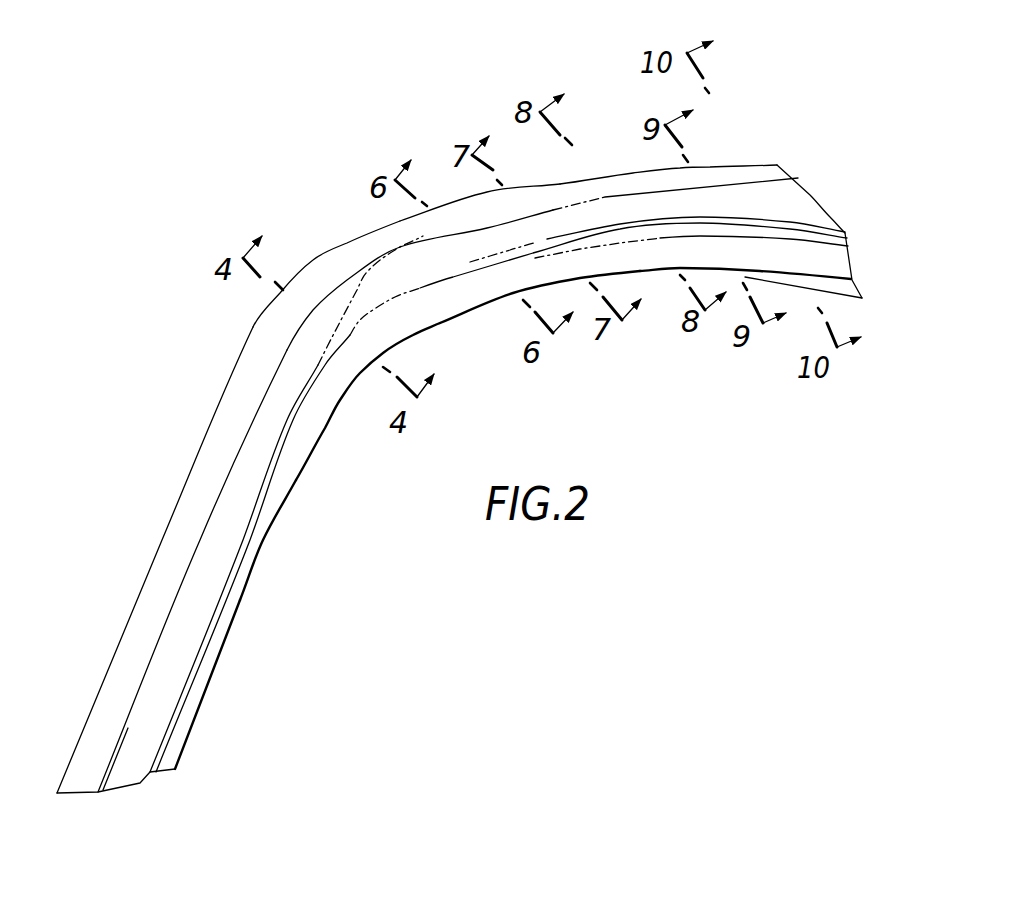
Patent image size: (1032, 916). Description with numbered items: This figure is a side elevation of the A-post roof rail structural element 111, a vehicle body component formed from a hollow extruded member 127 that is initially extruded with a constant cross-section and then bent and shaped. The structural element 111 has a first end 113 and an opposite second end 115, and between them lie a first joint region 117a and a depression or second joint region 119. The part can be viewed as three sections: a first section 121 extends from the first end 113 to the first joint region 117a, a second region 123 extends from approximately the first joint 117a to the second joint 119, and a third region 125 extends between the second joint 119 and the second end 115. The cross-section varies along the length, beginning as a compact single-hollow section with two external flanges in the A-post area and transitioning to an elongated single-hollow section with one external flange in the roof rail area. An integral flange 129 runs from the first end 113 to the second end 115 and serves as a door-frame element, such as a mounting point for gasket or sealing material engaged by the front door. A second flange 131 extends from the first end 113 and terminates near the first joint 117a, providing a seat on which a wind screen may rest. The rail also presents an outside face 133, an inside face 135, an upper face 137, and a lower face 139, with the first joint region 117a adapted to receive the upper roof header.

The A-post roof rail structural element 111 is at (768, 121).
The first end 113 is at (118, 796).
The second end 115 is at (830, 216).
The first joint region 117a is at (253, 327).
The second joint region 119 is at (598, 278).
The first section 121 is at (258, 558).
The second region 123 is at (340, 247).
The third region 125 is at (562, 183).
The hollow extruded member 127 is at (790, 172).
The integral flange 129 is at (300, 473).
The second flange 131 is at (182, 507).
The outside face 133 is at (232, 617).
The inside face 135 is at (773, 283).
The upper face 137 is at (477, 199).
The lower face 139 is at (673, 283).